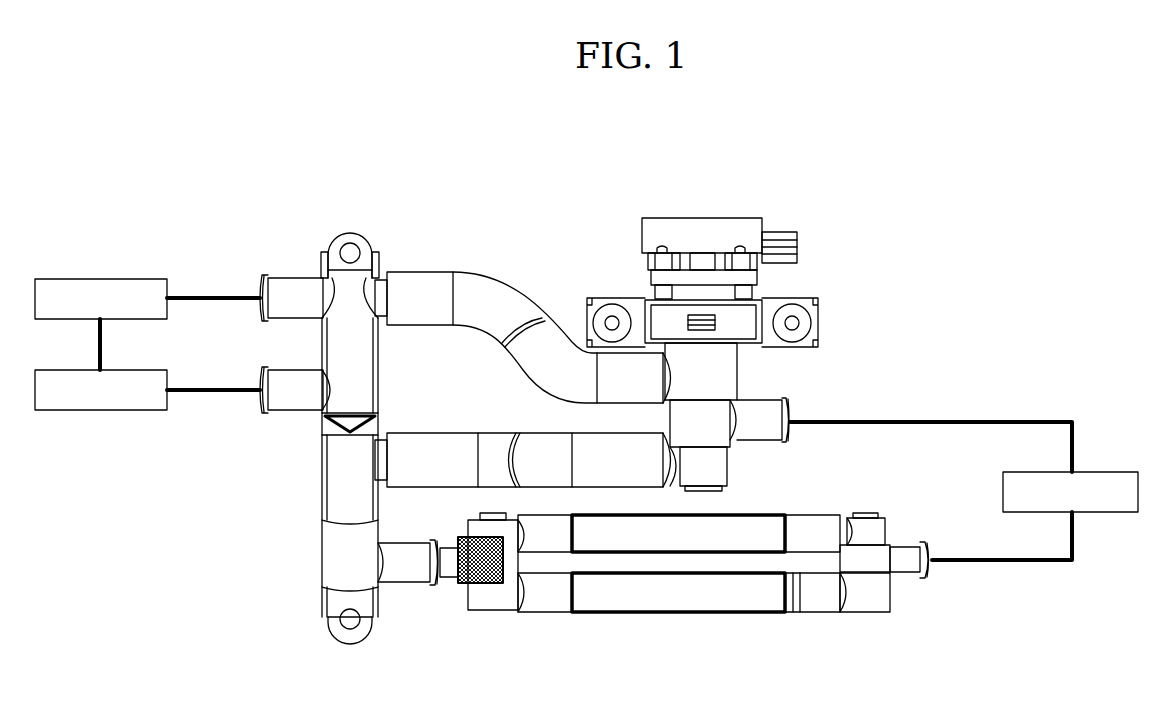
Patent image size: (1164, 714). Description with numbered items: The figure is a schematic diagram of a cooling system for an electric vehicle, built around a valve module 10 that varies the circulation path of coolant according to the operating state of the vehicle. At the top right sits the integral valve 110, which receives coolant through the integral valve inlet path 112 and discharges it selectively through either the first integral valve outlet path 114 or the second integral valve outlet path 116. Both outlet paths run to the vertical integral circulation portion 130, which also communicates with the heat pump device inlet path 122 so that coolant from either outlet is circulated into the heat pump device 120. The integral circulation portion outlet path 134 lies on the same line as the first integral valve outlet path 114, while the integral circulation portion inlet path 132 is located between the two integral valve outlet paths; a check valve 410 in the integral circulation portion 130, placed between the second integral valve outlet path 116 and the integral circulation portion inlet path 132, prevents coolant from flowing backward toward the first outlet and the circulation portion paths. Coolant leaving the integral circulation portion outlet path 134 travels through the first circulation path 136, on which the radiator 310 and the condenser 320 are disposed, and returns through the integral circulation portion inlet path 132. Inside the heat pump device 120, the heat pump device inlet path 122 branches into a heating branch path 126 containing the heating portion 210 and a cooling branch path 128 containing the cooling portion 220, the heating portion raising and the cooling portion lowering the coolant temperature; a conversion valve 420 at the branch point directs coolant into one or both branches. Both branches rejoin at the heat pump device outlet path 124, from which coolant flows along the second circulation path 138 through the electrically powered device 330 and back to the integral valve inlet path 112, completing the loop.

The valve module 10 is at (577, 247).
The integral valve 110 is at (745, 312).
The integral valve inlet path 112 is at (757, 410).
The first integral valve outlet path 114 is at (482, 282).
The second integral valve outlet path 116 is at (423, 447).
The heat pump device 120 is at (755, 629).
The heat pump device inlet path 122 is at (447, 568).
The heat pump device outlet path 124 is at (907, 568).
The heating branch path 126 is at (545, 540).
The cooling branch path 128 is at (818, 600).
The integral circulation portion 130 is at (345, 290).
The integral circulation portion inlet path 132 is at (290, 403).
The integral circulation portion outlet path 134 is at (283, 288).
The first circulation path 136 is at (200, 297).
The second circulation path 138 is at (966, 420).
The heating portion 210 is at (635, 540).
The cooling portion 220 is at (697, 600).
The radiator 310 is at (67, 287).
The condenser 320 is at (114, 402).
The electrically powered device 330 is at (1112, 503).
The check valve 410 is at (330, 430).
The conversion valve 420 is at (488, 585).